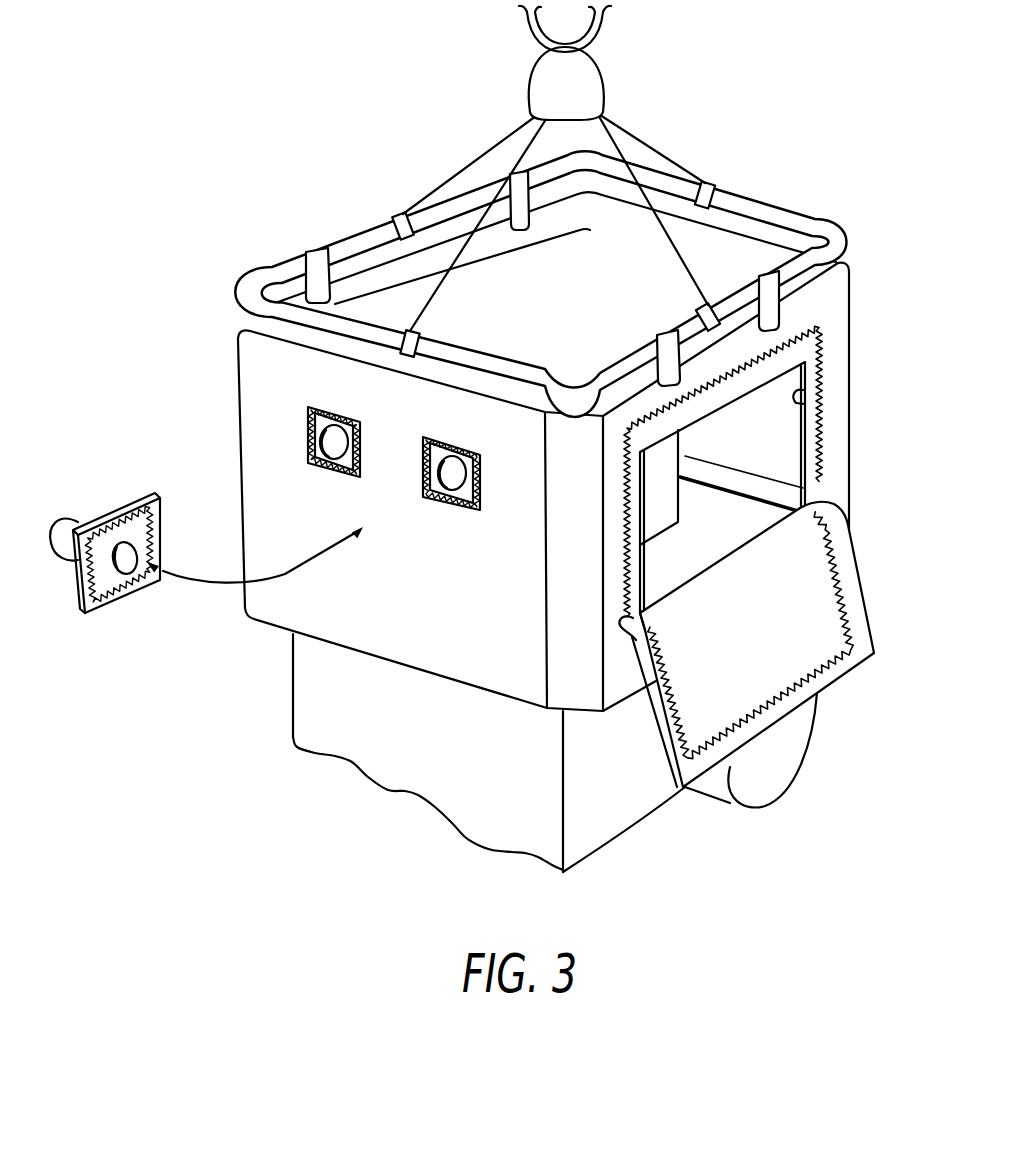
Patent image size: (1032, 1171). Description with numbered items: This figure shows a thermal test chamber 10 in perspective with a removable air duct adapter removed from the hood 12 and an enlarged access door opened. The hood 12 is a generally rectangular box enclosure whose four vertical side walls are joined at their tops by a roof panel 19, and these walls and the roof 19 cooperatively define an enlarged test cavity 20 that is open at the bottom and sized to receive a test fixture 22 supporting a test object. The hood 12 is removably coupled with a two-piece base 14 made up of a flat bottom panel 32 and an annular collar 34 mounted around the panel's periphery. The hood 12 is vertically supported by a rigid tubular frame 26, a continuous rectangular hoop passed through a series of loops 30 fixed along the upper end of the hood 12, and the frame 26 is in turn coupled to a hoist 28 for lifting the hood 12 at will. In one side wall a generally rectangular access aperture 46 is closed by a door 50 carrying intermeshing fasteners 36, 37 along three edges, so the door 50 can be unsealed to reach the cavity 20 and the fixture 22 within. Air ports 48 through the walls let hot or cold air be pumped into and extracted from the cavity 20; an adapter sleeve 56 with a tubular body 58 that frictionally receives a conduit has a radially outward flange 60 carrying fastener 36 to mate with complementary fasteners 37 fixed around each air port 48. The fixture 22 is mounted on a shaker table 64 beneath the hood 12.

The thermal test chamber 10 is at (160, 345).
The hood 12 is at (838, 300).
The two-piece base 14 is at (747, 523).
The roof panel 19 is at (545, 335).
The test cavity 20 is at (605, 471).
The test fixture 22 is at (672, 460).
The rigid tubular frame 26 is at (782, 208).
The hoist 28 is at (598, 88).
The loops 30 is at (316, 250).
The bottom panel 32 is at (528, 644).
The collar 34 is at (763, 483).
The intermeshing fastener 36 is at (818, 690).
The complementary intermeshing fastener 37 is at (823, 358).
The access aperture 46 is at (802, 398).
The air port 48 is at (340, 447).
The door 50 is at (527, 638).
The adapter sleeve 56 is at (206, 554).
The tubular body 58 is at (65, 553).
The flange 60 is at (157, 502).
The shaker table 64 is at (633, 795).